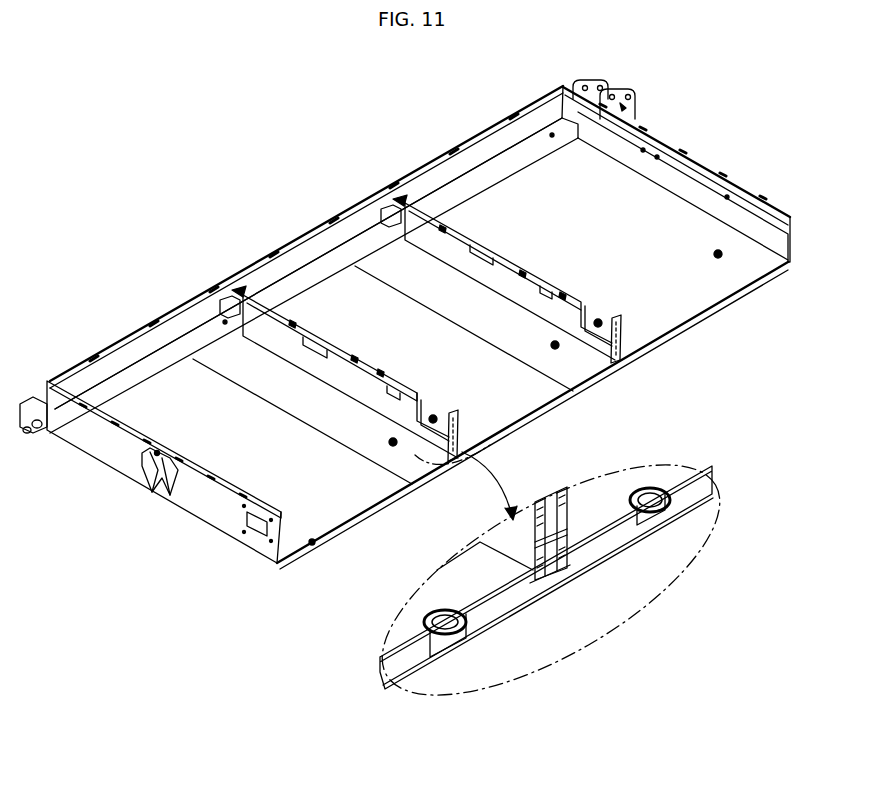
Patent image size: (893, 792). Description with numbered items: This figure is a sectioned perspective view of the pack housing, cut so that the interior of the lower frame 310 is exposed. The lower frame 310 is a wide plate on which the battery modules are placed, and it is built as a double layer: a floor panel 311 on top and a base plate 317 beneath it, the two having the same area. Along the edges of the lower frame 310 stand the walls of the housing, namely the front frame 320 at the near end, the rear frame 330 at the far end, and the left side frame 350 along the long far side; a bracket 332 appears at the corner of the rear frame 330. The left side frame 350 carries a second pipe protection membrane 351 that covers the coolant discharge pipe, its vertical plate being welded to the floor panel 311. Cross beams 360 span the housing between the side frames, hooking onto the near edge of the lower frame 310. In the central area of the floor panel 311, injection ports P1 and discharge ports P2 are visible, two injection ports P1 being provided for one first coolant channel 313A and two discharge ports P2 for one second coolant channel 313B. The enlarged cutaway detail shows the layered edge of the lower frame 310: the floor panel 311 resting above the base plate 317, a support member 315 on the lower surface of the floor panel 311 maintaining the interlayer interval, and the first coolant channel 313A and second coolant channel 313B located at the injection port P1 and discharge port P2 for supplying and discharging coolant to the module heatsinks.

The lower frame 310 is at (405, 396).
The floor panel 311 is at (690, 305).
The first coolant channel 313A is at (660, 520).
The second coolant channel 313B is at (450, 660).
The support member 315 is at (570, 600).
The base plate 317 is at (747, 290).
The front frame 320 is at (205, 504).
The rear frame 330 is at (700, 157).
The hinge bracket 332 is at (630, 99).
The left side frame 350 is at (333, 233).
The second pipe protection membrane 351 is at (137, 368).
The cross beam 360 is at (395, 205).
The injection port P1 is at (433, 417).
The discharge port P2 is at (391, 442).